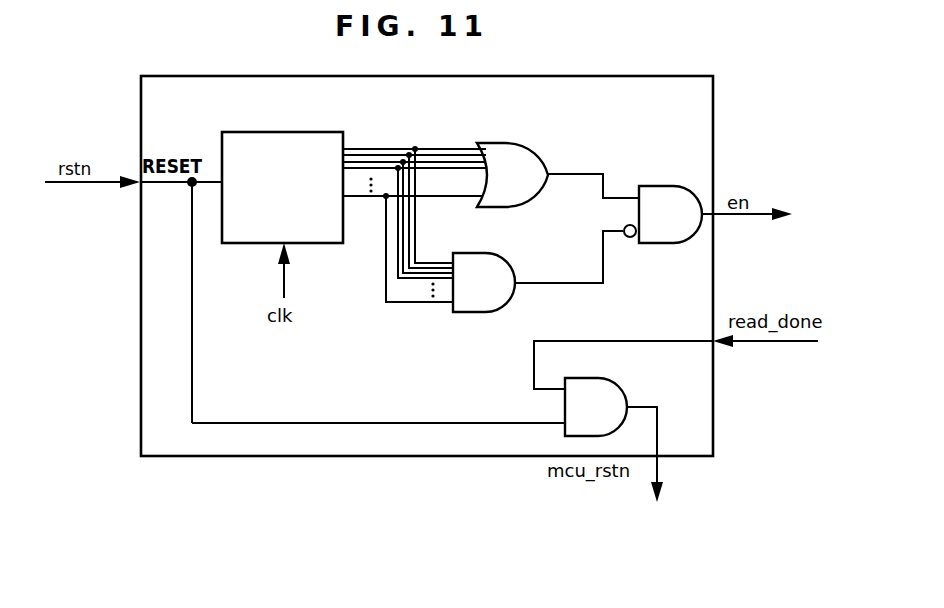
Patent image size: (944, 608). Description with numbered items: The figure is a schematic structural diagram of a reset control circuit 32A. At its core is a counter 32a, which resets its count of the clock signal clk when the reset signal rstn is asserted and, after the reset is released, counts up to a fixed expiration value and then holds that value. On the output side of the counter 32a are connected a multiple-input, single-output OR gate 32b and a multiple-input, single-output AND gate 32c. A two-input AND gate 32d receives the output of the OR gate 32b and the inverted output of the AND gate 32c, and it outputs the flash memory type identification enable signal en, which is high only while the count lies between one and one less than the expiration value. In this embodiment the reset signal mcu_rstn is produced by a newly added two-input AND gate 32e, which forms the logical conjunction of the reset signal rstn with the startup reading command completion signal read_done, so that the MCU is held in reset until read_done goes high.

The reset control circuit 32A is at (713, 103).
The counter 32a is at (261, 132).
The OR gate 32b is at (500, 143).
The AND gate 32c is at (508, 253).
The AND gate 32d is at (650, 186).
The AND gate 32e is at (625, 387).